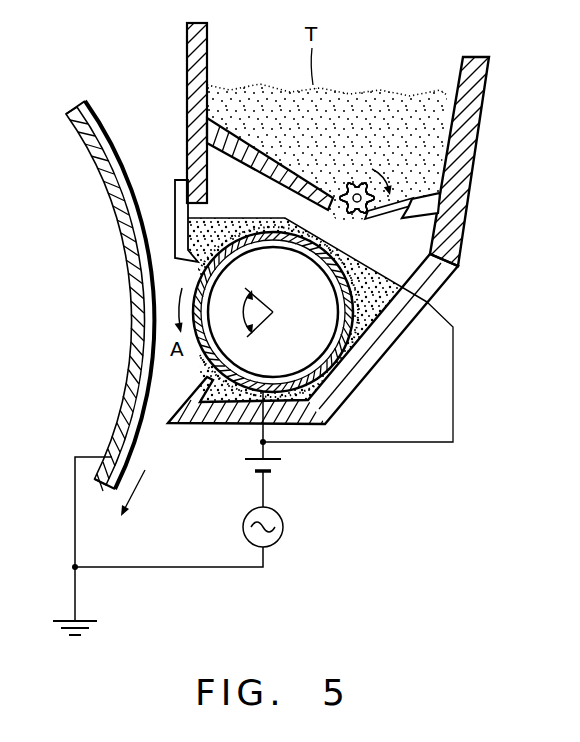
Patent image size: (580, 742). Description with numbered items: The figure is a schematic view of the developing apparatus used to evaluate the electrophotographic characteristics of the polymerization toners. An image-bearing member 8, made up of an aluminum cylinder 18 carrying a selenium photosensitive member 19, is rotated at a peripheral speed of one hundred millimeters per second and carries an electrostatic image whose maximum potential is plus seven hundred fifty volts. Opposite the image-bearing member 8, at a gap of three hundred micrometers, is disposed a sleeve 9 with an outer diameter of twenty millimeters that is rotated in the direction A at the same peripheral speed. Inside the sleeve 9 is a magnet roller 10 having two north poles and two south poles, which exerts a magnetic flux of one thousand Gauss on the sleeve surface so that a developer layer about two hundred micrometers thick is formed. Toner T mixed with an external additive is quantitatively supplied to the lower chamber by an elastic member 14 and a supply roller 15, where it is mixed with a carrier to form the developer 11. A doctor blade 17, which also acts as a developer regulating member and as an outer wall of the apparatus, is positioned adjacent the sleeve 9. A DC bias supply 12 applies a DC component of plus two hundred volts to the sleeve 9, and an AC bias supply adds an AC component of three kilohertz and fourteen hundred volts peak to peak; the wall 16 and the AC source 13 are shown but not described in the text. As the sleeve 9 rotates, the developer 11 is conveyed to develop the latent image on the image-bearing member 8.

The image-bearing member 8 is at (114, 112).
The sleeve 9 is at (230, 375).
The magnet roller 10 is at (295, 357).
The developer 11 is at (363, 265).
The DC bias supply 12 is at (276, 471).
The AC power source 13 is at (283, 530).
The elastic member 14 is at (403, 193).
The supply roller 15 is at (355, 180).
The container side wall 16 is at (477, 97).
The doctor blade 17 is at (178, 235).
The aluminum cylinder 18 is at (76, 114).
The selenium photosensitive member 19 is at (118, 158).